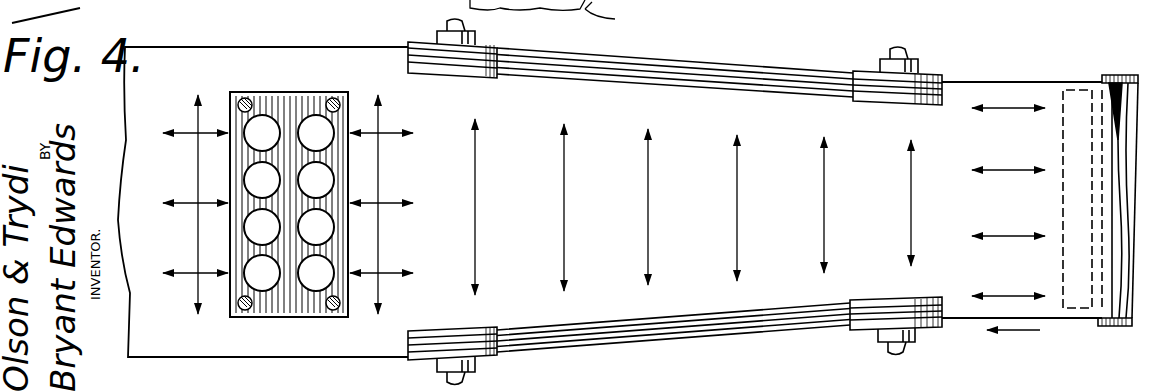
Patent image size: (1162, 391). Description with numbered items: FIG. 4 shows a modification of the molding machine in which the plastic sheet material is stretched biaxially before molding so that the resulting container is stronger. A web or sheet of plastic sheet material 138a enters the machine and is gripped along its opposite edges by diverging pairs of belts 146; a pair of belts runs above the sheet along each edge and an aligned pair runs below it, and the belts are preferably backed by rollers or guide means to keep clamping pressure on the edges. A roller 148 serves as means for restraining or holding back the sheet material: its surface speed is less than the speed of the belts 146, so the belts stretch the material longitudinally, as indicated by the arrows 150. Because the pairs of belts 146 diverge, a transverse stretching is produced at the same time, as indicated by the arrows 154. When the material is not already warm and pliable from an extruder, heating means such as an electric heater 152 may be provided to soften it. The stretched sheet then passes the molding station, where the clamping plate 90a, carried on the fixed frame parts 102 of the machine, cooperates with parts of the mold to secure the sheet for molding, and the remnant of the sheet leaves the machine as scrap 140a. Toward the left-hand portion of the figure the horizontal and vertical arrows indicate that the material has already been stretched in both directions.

The fixed frame parts 102 is at (559, 14).
The scrap 140a is at (156, 58).
The clamping plate 90a is at (263, 92).
The diverging pairs of belts 146 is at (828, 78).
The arrows indicating transverse stretching 154 is at (824, 188).
The arrows indicating longitudinal stretching 150 is at (1027, 112).
The heater 152 is at (1087, 303).
The roller 148 is at (1131, 57).
The web or sheet of plastic sheet material 138a is at (1068, 82).